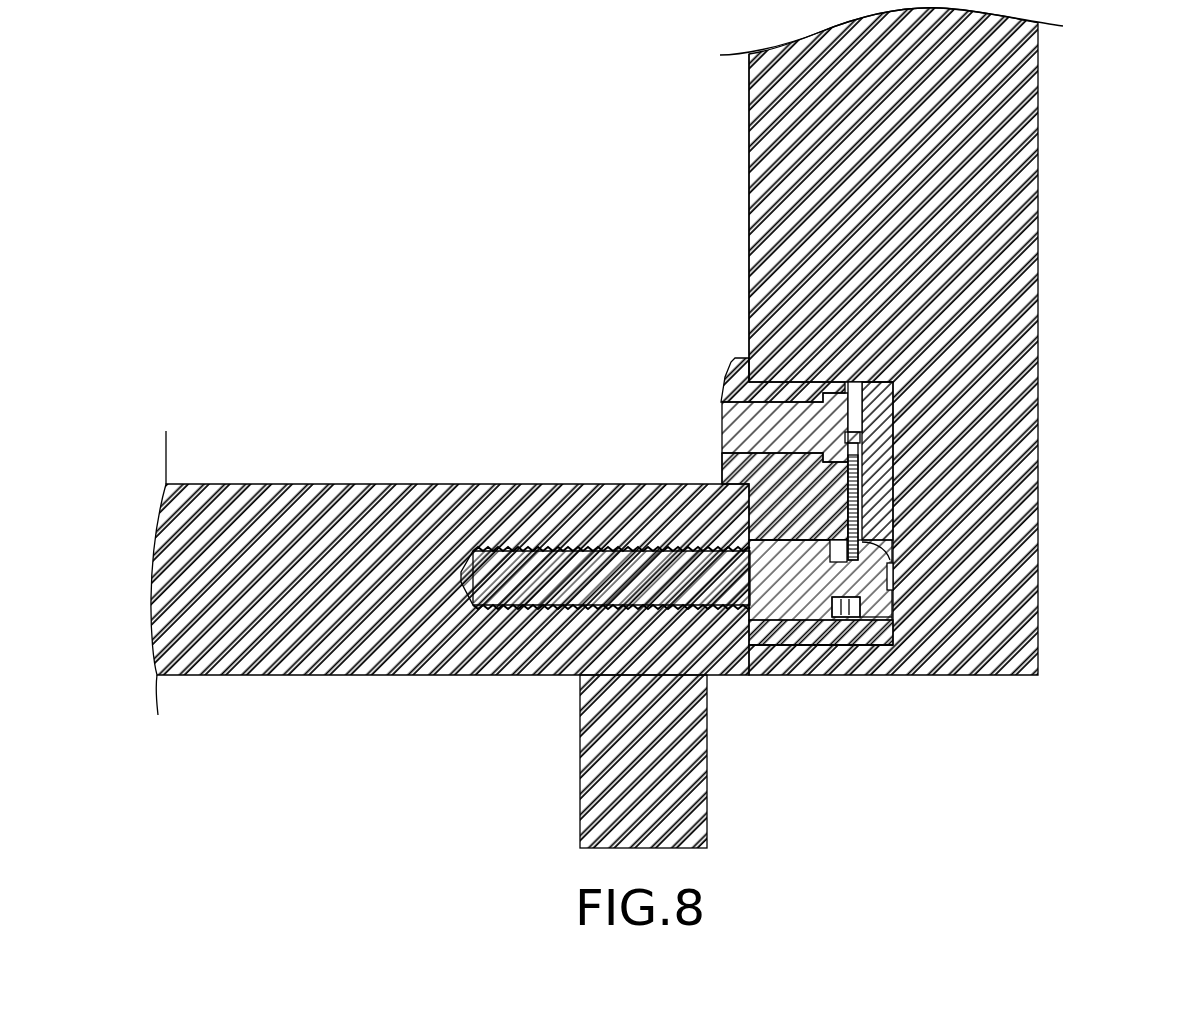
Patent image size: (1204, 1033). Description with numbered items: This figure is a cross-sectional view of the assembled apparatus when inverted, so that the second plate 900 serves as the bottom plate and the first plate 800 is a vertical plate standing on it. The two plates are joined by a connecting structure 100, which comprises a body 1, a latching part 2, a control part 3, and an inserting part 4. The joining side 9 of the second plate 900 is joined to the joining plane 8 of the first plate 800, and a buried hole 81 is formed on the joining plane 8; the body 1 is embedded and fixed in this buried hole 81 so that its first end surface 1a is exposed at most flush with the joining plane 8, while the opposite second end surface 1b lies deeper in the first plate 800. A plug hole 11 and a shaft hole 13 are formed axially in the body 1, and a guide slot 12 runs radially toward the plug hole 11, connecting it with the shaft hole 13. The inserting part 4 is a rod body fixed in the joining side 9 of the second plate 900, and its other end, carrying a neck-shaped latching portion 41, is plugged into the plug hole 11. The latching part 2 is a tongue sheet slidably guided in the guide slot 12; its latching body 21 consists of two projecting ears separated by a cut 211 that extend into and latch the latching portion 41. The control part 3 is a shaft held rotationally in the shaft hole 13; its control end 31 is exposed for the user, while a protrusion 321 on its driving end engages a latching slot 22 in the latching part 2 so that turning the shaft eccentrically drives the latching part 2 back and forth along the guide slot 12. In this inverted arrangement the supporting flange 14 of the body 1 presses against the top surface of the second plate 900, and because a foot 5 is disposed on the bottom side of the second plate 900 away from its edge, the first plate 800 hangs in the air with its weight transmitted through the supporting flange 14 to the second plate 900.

The first plate 800 is at (1050, 224).
The joining plane 8 is at (749, 238).
The buried hole 81 is at (812, 648).
The second plate 900 is at (400, 683).
The foot 5 is at (597, 781).
The connecting structure 100 is at (598, 375).
The control part 3 is at (706, 409).
The control end 31 is at (721, 432).
The protrusion 321 is at (893, 440).
The guide slot 12 is at (862, 380).
The body 1 is at (790, 662).
The shaft hole 13 is at (735, 480).
The supporting flange 14 is at (745, 498).
The first end surface 1a is at (760, 626).
The second end surface 1b is at (895, 622).
The plug hole 11 is at (773, 648).
The joining side 9 is at (768, 648).
The inserting part 4 is at (548, 538).
The latching portion 41 is at (842, 648).
The latching body 21 is at (862, 640).
The cut 211 is at (862, 558).
The latching part 2 is at (875, 472).
The latching slot 22 is at (860, 440).